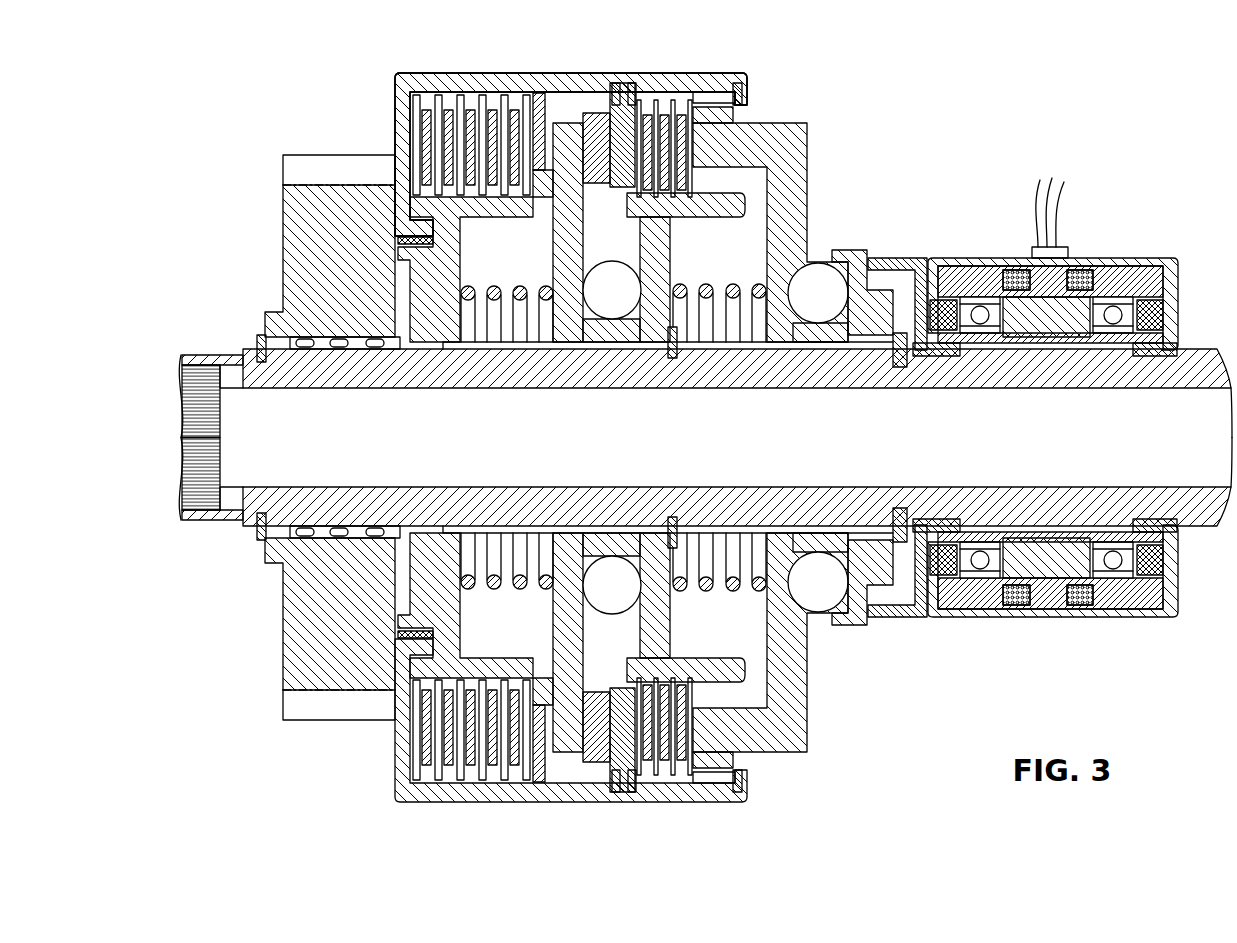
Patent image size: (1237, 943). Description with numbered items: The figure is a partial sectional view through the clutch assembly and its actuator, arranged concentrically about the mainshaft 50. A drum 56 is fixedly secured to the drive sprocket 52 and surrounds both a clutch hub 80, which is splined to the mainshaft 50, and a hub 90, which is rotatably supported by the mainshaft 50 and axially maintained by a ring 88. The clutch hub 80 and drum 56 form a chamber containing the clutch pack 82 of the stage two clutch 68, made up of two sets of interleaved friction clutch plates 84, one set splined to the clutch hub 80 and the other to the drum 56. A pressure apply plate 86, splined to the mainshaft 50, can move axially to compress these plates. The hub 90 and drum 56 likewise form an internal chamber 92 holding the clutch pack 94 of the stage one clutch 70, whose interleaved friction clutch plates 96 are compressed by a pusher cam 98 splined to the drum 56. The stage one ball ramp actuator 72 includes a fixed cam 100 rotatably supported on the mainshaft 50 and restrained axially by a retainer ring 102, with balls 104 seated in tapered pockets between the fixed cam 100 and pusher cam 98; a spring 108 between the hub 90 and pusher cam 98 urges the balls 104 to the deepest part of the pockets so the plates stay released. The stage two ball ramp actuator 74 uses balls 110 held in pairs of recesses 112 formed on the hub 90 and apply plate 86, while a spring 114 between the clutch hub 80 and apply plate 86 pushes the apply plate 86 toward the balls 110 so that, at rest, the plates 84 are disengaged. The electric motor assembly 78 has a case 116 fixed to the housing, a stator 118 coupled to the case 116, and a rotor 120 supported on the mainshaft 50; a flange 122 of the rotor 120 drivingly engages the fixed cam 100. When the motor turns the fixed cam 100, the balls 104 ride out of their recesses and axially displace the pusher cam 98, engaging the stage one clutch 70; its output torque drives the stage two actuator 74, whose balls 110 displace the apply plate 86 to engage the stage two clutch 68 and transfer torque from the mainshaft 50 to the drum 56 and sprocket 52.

The mainshaft 50 is at (235, 347).
The drive sprocket 52 is at (295, 213).
The drum 56 is at (400, 90).
The stage 2 clutch 68 is at (345, 104).
The stage 1 clutch 70 is at (768, 87).
The stage 1 ball ramp actuator 72 is at (817, 340).
The stage 2 ball ramp actuator 74 is at (596, 337).
The electric motor assembly 78 is at (1006, 195).
The clutch hub 80 is at (423, 322).
The clutch pack 82 is at (546, 110).
The friction clutch plates 84 is at (458, 96).
The pressure apply plate 86 is at (565, 243).
The ring 88 is at (675, 360).
The hub 90 is at (650, 322).
The internal chamber 92 is at (720, 113).
The clutch pack 94 is at (697, 100).
The friction clutch plates 96 is at (650, 92).
The pusher cam 98 is at (795, 190).
The fixed cam 100 is at (855, 252).
The retainer ring 102 is at (900, 368).
The balls 104 is at (810, 278).
The spring 108 is at (708, 335).
The balls 110 is at (607, 277).
The recesses 112 is at (618, 309).
The spring 114 is at (493, 322).
The case 116 is at (1105, 260).
The stator 118 is at (958, 277).
The rotor 120 is at (1052, 338).
The flange 122 is at (905, 262).